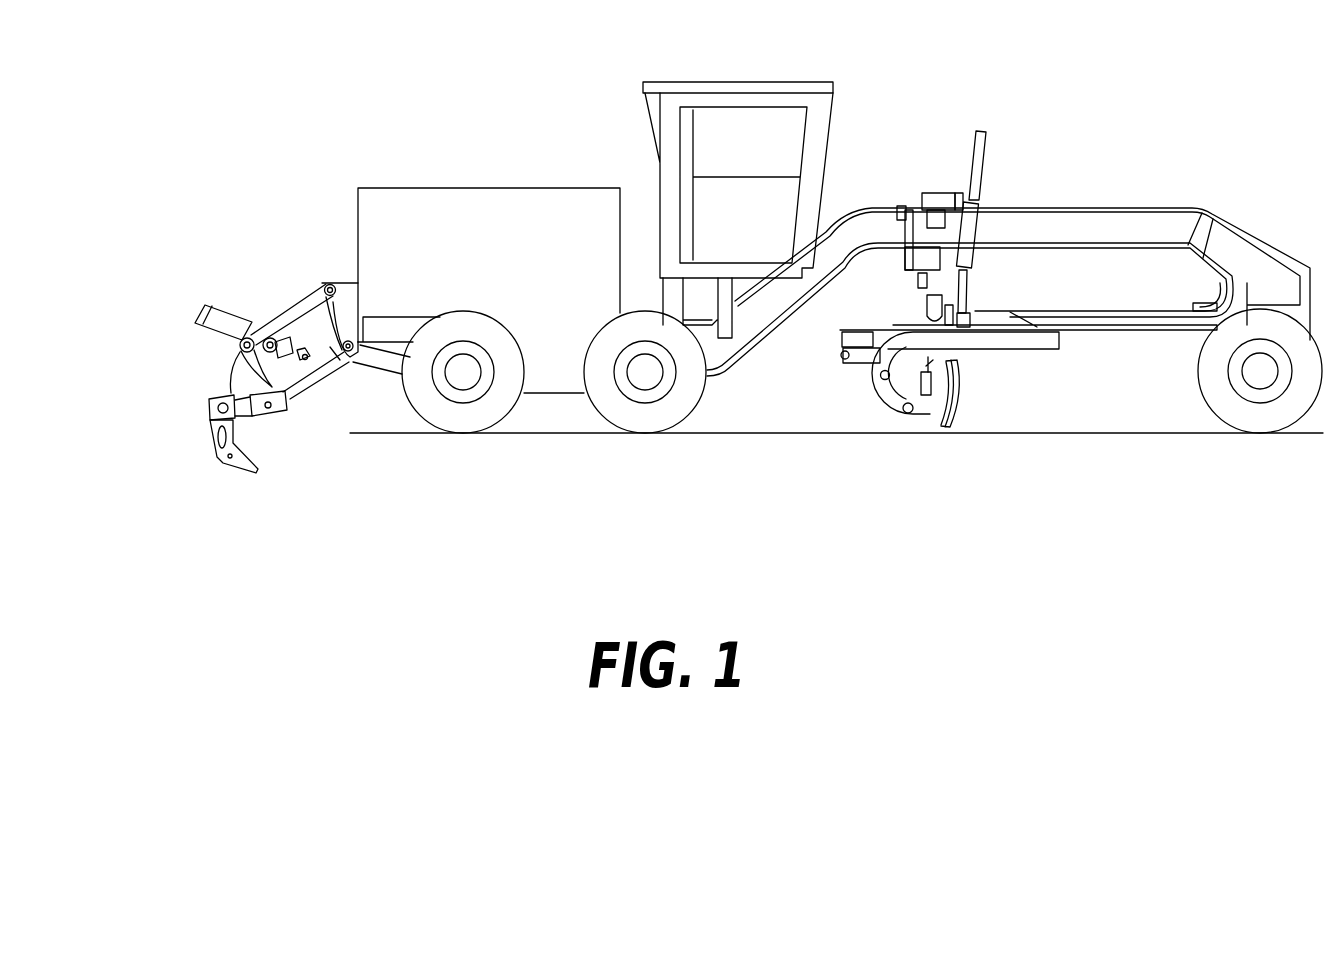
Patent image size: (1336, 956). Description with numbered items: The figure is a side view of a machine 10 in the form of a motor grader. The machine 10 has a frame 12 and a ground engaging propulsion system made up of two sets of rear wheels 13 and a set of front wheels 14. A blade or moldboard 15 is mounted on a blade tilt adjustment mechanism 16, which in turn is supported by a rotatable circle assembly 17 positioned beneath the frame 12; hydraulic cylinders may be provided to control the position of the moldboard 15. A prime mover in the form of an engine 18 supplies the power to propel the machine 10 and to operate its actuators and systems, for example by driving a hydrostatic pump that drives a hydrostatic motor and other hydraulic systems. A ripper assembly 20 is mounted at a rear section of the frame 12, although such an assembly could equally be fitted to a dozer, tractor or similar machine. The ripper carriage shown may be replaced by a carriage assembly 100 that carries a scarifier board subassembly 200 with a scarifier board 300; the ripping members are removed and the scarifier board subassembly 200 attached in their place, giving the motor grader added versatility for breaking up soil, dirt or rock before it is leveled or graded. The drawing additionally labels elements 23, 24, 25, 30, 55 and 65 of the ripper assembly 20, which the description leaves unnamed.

The machine 10 is at (1091, 131).
The frame 12 is at (1147, 210).
The rear wheels 13 is at (485, 415).
The front wheels 14 is at (1252, 414).
The blade or moldboard 15 is at (953, 413).
The blade tilt adjustment mechanism 16 is at (893, 410).
The rotatable circle assembly 17 is at (1087, 332).
The engine 18 is at (473, 198).
The ripper assembly 20 is at (235, 240).
The ground engaging tooth 23 is at (235, 467).
The hydraulic cylinder 24 is at (233, 315).
The lower mounting link 25 is at (393, 367).
The upper linkage arm 30 is at (352, 278).
The lower linkage arm 55 is at (313, 390).
The pivot bracket 65 is at (282, 332).
The carriage assembly 100 is at (823, 433).
The scarifier board subassembly 200 is at (185, 436).
The scarifier board 300 is at (248, 405).